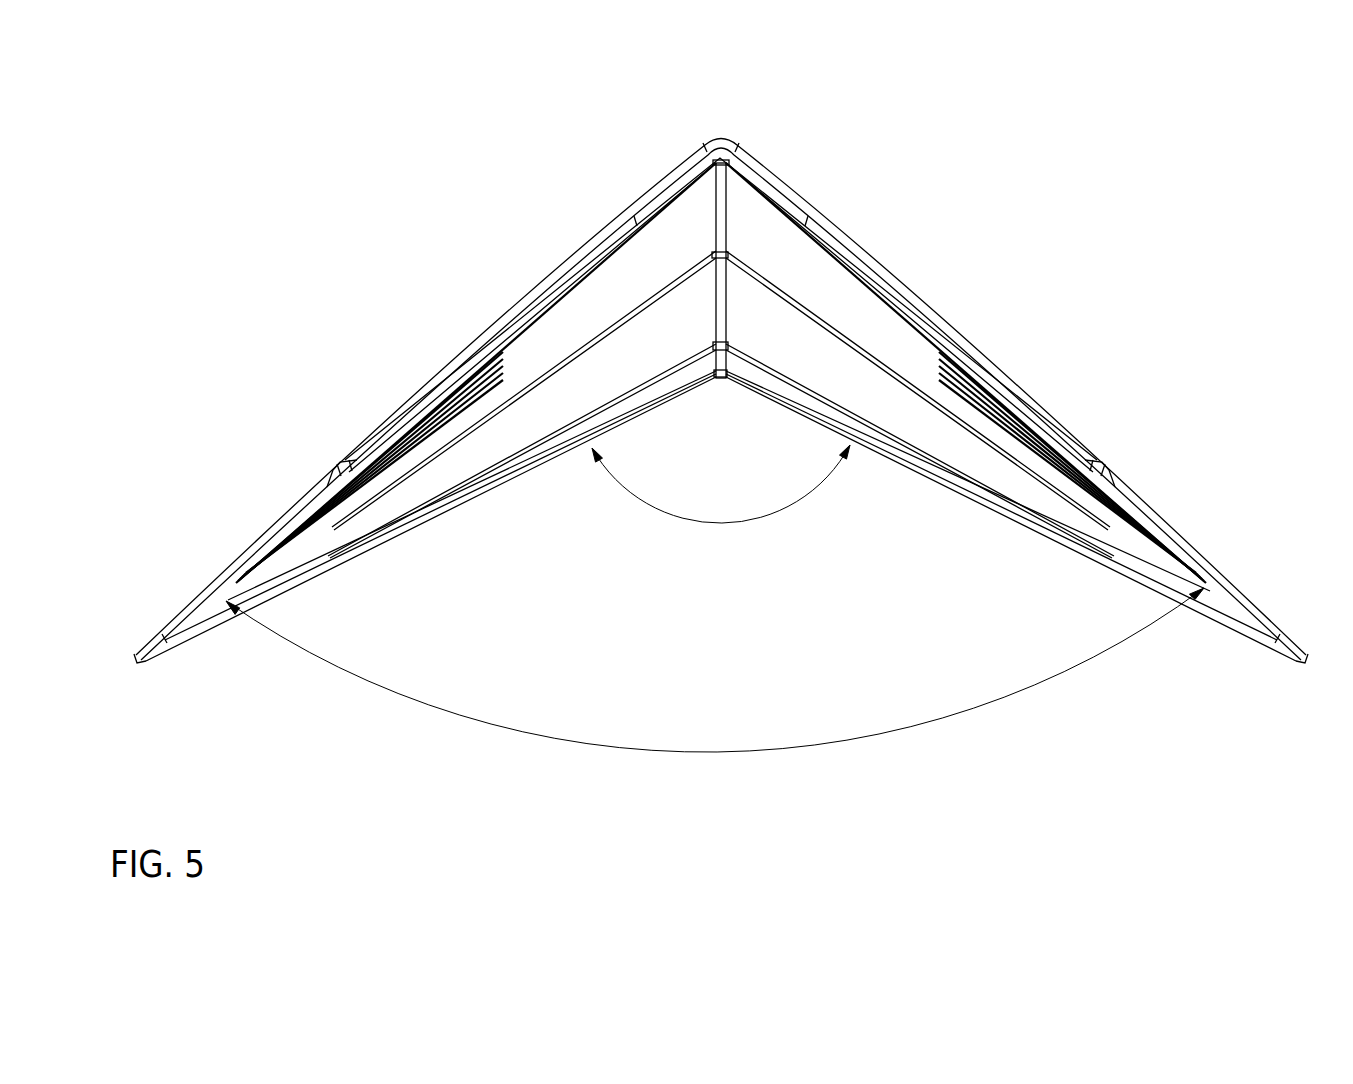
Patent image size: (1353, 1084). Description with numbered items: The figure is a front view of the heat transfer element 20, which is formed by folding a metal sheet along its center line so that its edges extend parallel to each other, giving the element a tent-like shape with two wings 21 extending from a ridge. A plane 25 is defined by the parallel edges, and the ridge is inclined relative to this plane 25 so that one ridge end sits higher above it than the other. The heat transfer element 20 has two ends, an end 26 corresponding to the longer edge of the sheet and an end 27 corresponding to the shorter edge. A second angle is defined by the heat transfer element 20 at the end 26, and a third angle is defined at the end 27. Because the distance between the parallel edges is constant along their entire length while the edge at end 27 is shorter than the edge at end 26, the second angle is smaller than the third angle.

The heat transfer element 20 is at (797, 173).
The wing 21 is at (1135, 508).
The plane 25 is at (1235, 636).
The end 26 is at (268, 540).
The end 27 is at (1000, 505).